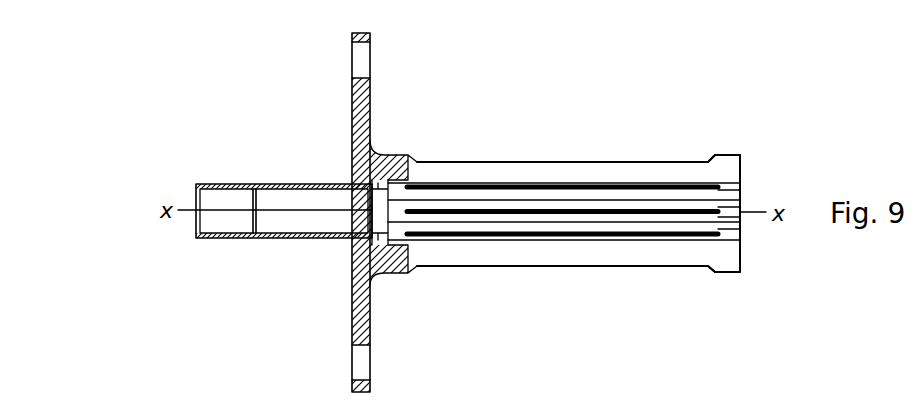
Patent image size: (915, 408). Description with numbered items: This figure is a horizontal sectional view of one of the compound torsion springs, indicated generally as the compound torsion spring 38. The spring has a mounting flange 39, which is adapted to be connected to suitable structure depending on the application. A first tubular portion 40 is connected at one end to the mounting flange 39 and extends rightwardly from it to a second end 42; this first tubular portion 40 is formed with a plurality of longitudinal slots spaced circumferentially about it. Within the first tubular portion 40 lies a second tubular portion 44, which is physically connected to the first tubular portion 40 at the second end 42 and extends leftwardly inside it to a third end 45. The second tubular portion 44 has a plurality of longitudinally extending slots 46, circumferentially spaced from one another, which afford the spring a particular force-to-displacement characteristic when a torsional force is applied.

The compound torsion spring 38 is at (481, 113).
The mounting flange 39 is at (351, 124).
The first tubular portion 40 is at (545, 158).
The second end 42 is at (727, 273).
The second tubular portion 44 is at (583, 192).
The third end 45 is at (345, 244).
The longitudinally extending slot 46 is at (545, 237).